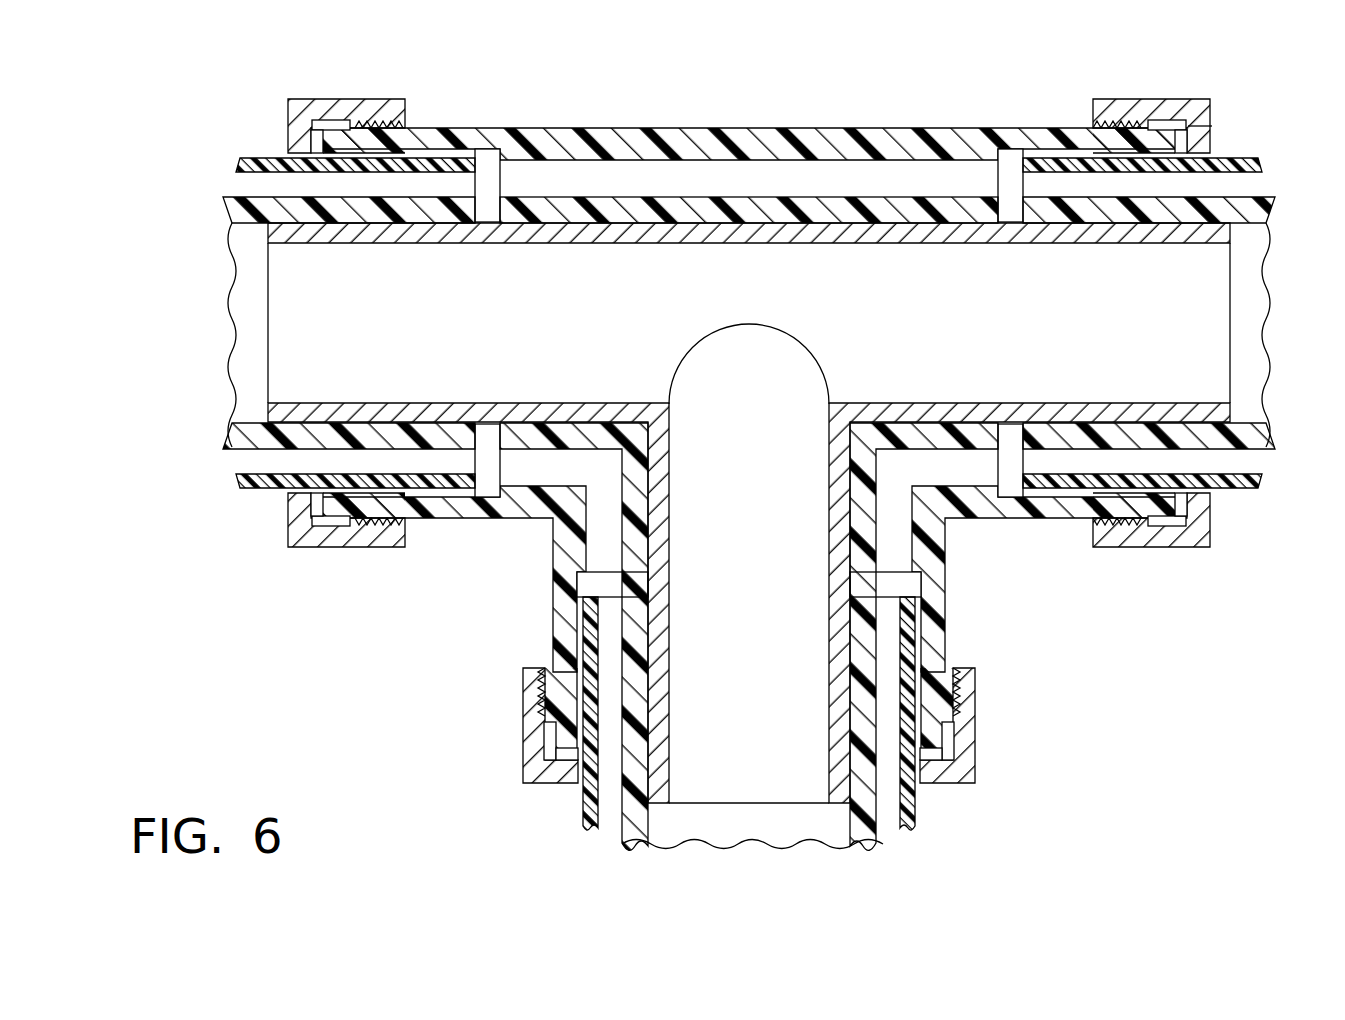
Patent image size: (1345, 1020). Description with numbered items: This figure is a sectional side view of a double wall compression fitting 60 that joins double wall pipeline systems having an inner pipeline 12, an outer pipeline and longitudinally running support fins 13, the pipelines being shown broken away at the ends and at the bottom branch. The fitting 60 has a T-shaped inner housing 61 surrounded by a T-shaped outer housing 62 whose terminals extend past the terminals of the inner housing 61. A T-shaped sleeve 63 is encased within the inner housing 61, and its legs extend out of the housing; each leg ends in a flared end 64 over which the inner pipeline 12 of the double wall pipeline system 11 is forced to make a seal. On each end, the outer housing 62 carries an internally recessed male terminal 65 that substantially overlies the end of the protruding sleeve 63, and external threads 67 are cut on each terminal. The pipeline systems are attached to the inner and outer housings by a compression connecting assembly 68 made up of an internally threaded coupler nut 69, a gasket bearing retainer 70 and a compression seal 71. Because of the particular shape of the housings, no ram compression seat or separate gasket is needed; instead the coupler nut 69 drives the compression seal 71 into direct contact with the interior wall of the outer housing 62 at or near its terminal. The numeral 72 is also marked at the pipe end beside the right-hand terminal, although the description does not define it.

The double wall pipeline system 11 is at (247, 327).
The inner pipeline 12 is at (1233, 482).
The support fins 13 is at (1208, 465).
The fitting 60 is at (513, 563).
The T-shaped inner housing 61 is at (640, 212).
The T-shaped outer housing 62 is at (632, 142).
The T-shaped sleeve 63 is at (793, 235).
The flared end 64 is at (1187, 232).
The internally recessed male terminal 65 is at (1032, 135).
The external threads 67 is at (1138, 122).
The compression connecting assembly 68 is at (1183, 95).
The coupler nut 69 is at (1198, 107).
The gasket bearing retainer 70 is at (1215, 135).
The compression seal 71 is at (1170, 130).
The pipe end portion 72 is at (1130, 205).